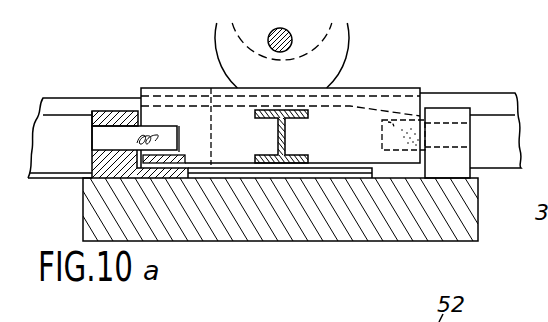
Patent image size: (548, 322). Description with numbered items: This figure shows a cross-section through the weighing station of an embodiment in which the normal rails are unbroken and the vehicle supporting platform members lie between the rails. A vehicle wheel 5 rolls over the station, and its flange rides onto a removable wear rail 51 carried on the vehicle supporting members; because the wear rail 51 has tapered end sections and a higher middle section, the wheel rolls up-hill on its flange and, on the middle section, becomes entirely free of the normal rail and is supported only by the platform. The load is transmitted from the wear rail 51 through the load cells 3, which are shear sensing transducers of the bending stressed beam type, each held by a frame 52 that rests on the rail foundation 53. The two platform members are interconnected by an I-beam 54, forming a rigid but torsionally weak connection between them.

The load cell 3 is at (116, 134).
The vehicle wheel 5 is at (221, 28).
The removable wear rail 51 is at (349, 104).
The frame 52 is at (122, 118).
The rail foundation 53 is at (466, 212).
The I-beam 54 is at (288, 135).